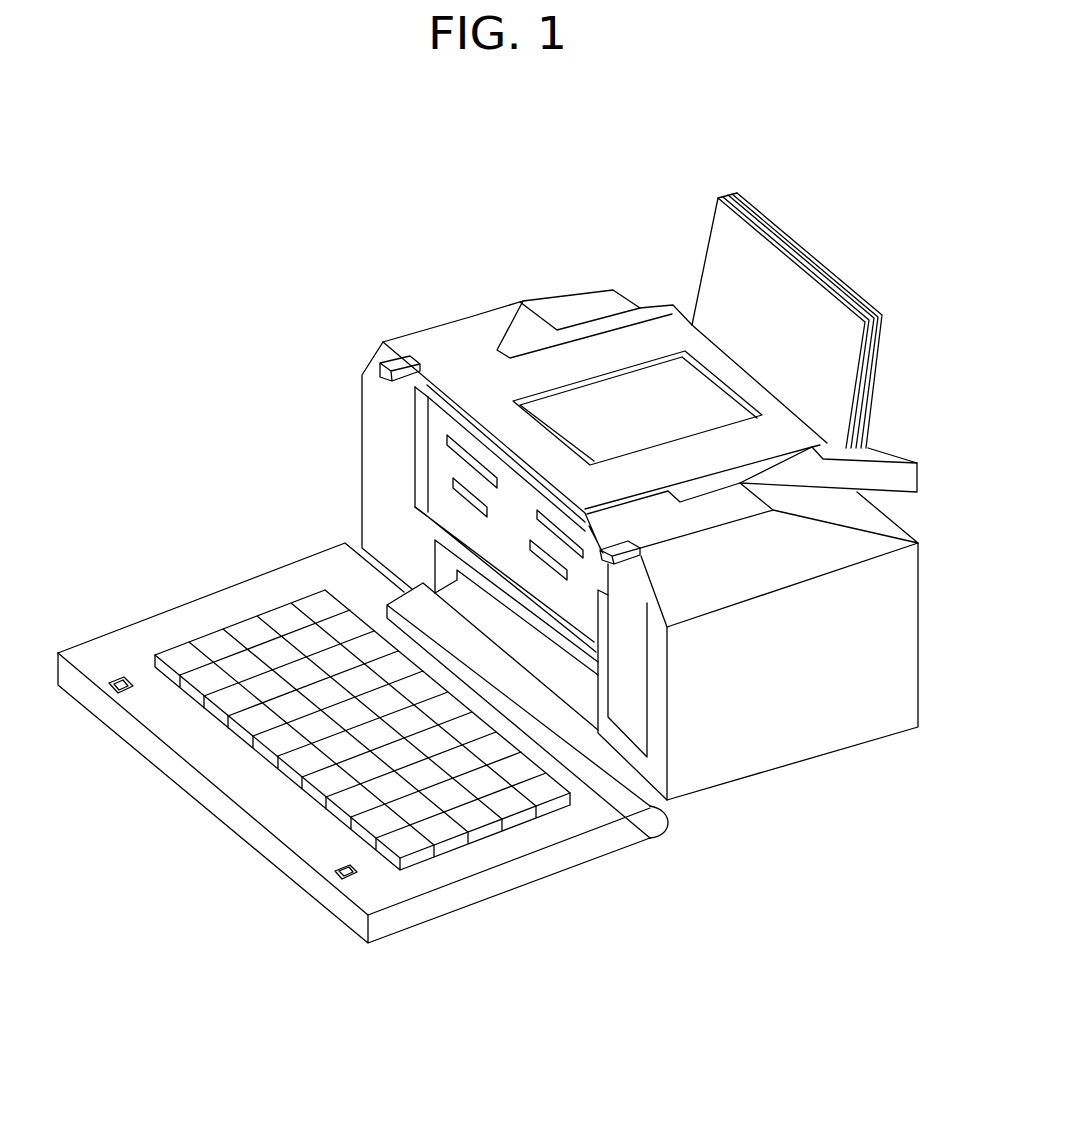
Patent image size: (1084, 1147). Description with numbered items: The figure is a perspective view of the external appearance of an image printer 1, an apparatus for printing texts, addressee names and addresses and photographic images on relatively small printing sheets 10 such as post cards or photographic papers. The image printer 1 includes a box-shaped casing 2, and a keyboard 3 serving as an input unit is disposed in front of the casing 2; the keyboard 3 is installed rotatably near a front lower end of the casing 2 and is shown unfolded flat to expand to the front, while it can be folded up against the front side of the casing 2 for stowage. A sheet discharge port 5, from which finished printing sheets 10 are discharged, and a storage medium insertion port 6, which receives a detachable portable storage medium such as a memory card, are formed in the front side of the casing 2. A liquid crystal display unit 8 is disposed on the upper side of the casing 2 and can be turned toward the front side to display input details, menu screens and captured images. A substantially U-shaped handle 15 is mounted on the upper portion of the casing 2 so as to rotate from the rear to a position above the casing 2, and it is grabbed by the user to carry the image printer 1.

The image printer 1 is at (317, 287).
The casing 2 is at (762, 732).
The keyboard 3 is at (242, 618).
The sheet discharge port 5 is at (559, 655).
The storage medium insertion port 6 is at (453, 480).
The liquid crystal display unit 8 is at (578, 403).
The printing sheets 10 is at (787, 293).
The handle 15 is at (877, 473).